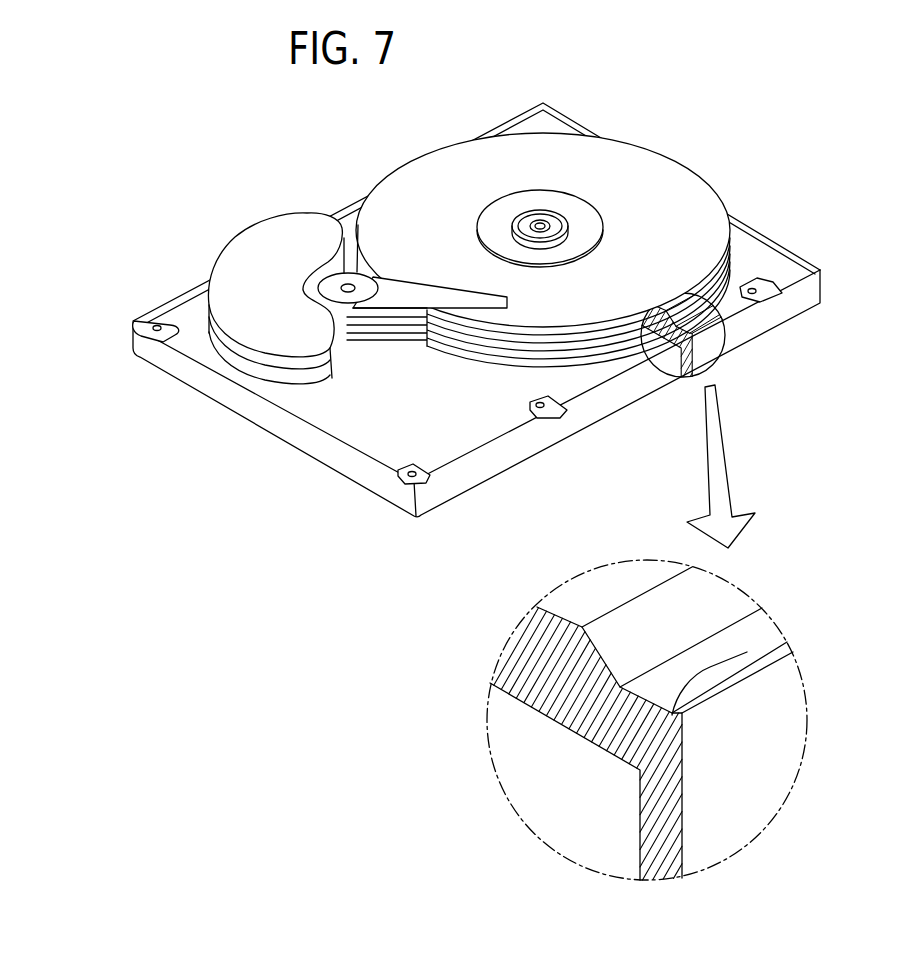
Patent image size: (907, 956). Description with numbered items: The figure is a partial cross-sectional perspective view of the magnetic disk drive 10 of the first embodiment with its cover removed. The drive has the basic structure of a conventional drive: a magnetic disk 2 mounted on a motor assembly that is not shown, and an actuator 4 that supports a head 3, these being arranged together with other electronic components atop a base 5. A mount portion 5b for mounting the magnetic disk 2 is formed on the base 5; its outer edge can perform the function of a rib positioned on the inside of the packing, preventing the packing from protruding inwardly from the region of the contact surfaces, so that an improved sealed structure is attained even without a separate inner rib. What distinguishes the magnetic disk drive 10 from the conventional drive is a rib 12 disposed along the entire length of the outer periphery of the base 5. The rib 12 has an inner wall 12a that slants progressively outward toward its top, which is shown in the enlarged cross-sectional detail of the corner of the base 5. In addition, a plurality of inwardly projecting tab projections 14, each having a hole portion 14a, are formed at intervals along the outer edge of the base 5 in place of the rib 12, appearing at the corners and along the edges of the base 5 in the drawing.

The magnetic disk drive 10 is at (46, 166).
The magnetic disk 2 is at (683, 205).
The head 3 is at (487, 300).
The actuator 4 is at (336, 352).
The base 5 is at (272, 425).
The mount portion 5b is at (717, 595).
The rib 12 is at (803, 252).
The inner wall 12a is at (747, 652).
The tab projections 14 is at (137, 331).
The hole portions 14a is at (157, 327).